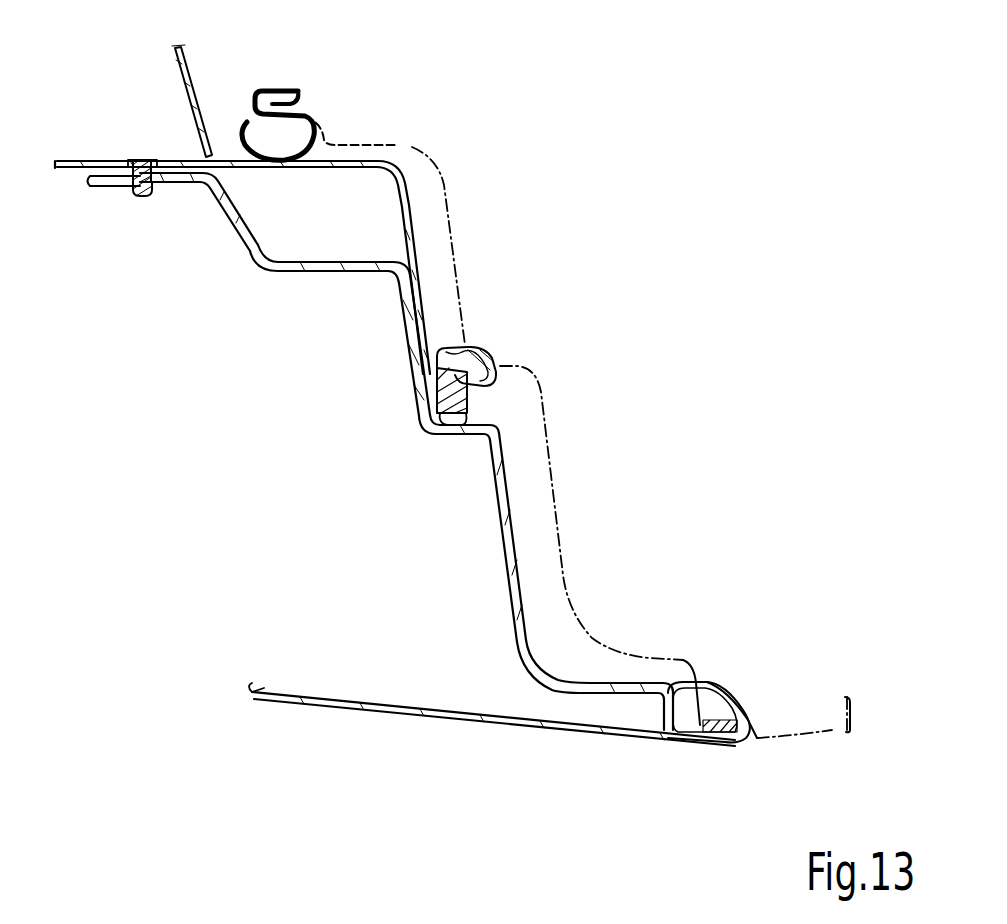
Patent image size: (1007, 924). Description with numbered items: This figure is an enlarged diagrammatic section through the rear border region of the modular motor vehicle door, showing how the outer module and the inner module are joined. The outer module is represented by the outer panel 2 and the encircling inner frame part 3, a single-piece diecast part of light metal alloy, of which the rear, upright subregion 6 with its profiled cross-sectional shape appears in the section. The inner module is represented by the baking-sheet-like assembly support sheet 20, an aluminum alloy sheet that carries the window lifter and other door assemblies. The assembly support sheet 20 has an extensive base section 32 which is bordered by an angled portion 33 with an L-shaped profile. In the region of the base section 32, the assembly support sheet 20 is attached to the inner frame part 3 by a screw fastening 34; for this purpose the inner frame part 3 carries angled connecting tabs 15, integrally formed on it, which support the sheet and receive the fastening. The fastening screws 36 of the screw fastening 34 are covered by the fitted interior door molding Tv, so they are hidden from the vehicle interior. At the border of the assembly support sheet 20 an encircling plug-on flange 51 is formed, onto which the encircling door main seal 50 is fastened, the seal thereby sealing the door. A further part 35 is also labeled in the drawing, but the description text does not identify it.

The sill panel 2 is at (403, 718).
The body panel 3 is at (409, 397).
The flange 6 is at (318, 266).
The inner panel section 15 is at (237, 223).
The outer sheet bar 20 is at (74, 161).
The sealing profile 32 is at (317, 126).
The outer sheet arm 33 is at (422, 302).
The fastening clip 34 is at (137, 132).
The bent corner 35 is at (363, 193).
The clip foot 36 is at (143, 197).
The retaining clip 50 is at (482, 352).
The clip block 51 is at (460, 427).
The pin Tv is at (190, 77).